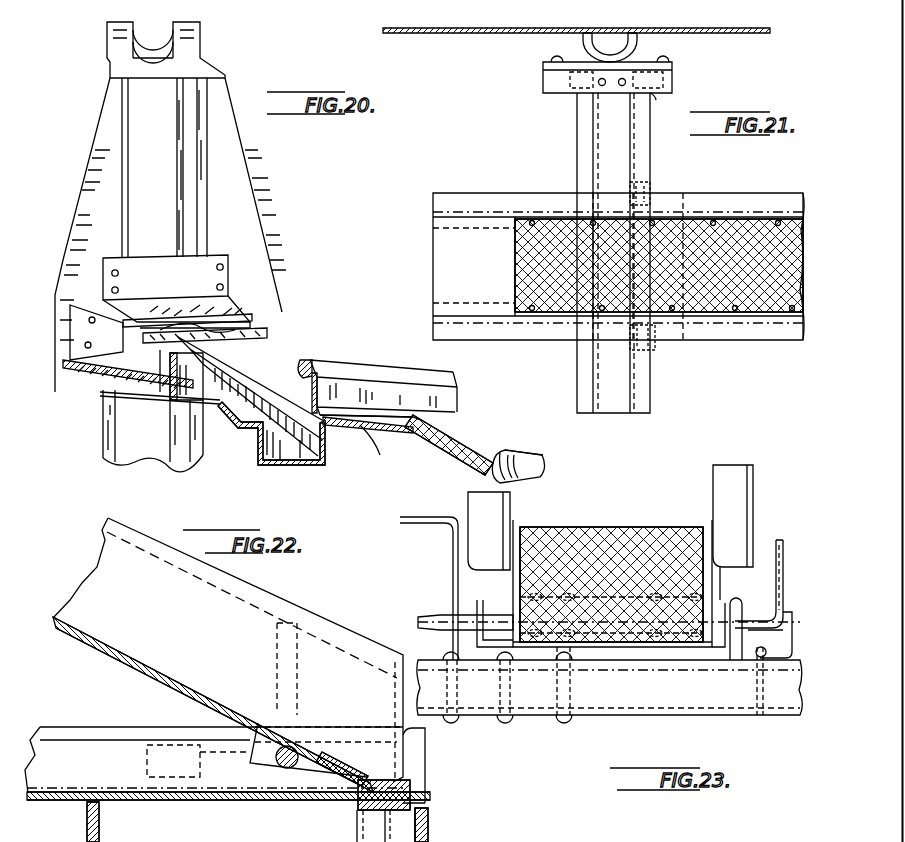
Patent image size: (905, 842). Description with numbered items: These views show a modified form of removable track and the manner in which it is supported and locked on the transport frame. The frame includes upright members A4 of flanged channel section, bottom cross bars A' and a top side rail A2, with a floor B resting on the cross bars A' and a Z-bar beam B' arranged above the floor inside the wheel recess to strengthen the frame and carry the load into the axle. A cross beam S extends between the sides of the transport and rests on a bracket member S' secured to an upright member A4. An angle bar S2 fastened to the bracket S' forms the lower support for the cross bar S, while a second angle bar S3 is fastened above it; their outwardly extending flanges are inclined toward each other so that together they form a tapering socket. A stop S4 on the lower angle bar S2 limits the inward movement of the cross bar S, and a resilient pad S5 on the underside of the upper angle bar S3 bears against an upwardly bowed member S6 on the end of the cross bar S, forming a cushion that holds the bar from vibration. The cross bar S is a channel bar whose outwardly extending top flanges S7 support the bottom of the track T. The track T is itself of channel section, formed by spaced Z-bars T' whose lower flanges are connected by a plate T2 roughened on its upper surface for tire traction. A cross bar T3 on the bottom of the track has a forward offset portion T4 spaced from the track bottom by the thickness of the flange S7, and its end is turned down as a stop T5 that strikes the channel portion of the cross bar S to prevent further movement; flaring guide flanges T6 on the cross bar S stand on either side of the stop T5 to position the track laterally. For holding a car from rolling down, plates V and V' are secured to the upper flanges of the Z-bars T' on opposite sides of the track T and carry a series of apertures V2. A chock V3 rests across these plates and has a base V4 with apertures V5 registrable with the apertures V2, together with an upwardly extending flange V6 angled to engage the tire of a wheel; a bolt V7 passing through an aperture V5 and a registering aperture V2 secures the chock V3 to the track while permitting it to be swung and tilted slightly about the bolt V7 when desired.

In FIG. 21, the cross bar A' is at (576, 31).
In FIG. 22, the top side rail A2 is at (428, 827).
In FIG. 23, the top side rail A2 is at (790, 707).
In FIG. 20, the upright member A4 is at (197, 40).
In FIG. 22, the floor B is at (227, 784).
In FIG. 23, the floor B is at (609, 687).
In FIG. 23, the beam B' is at (600, 562).
In FIG. 20, the cross beam S is at (279, 449).
In FIG. 21, the cross beam S is at (629, 253).
In FIG. 20, the bracket member S' is at (170, 235).
In FIG. 21, the bracket member S' is at (630, 67).
In FIG. 20, the angle bar S2 is at (110, 370).
In FIG. 21, the angle bar S2 is at (673, 80).
In FIG. 20, the angle bar S3 is at (228, 272).
In FIG. 21, the angle bar S3 is at (643, 73).
In FIG. 20, the stop S4 is at (190, 392).
In FIG. 21, the stop S4 is at (573, 95).
In FIG. 20, the resilient pad S5 is at (252, 325).
In FIG. 20, the upwardly bowed member S6 is at (267, 338).
In FIG. 21, the upwardly bowed member S6 is at (648, 95).
In FIG. 20, the top flange S7 is at (270, 358).
In FIG. 21, the top flange S7 is at (650, 133).
In FIG. 20, the track member T is at (370, 383).
In FIG. 21, the track member T is at (618, 250).
In FIG. 20, the Z-bar T' is at (377, 371).
In FIG. 21, the Z-bar T' is at (659, 235).
In FIG. 20, the plate T2 is at (483, 433).
In FIG. 21, the plate T2 is at (760, 296).
In FIG. 20, the cross bar T3 is at (423, 423).
In FIG. 21, the cross bar T3 is at (685, 187).
In FIG. 20, the offset portion T4 is at (363, 427).
In FIG. 21, the offset portion T4 is at (705, 193).
In FIG. 20, the stop T5 is at (390, 410).
In FIG. 21, the guide flange T6 is at (653, 337).
In FIG. 22, the plate V is at (352, 777).
In FIG. 23, the plate V is at (611, 570).
In FIG. 22, the plate V' is at (345, 740).
In FIG. 22, the aperture V2 is at (408, 787).
In FIG. 23, the aperture V2 is at (628, 660).
In FIG. 22, the chock V3 is at (383, 833).
In FIG. 23, the chock V3 is at (582, 718).
In FIG. 23, the base V4 is at (737, 600).
In FIG. 22, the aperture V5 is at (297, 747).
In FIG. 23, the aperture V5 is at (747, 632).
In FIG. 22, the flange V6 is at (308, 630).
In FIG. 23, the flange V6 is at (773, 543).
In FIG. 22, the bolt V7 is at (153, 740).
In FIG. 23, the bolt V7 is at (787, 663).